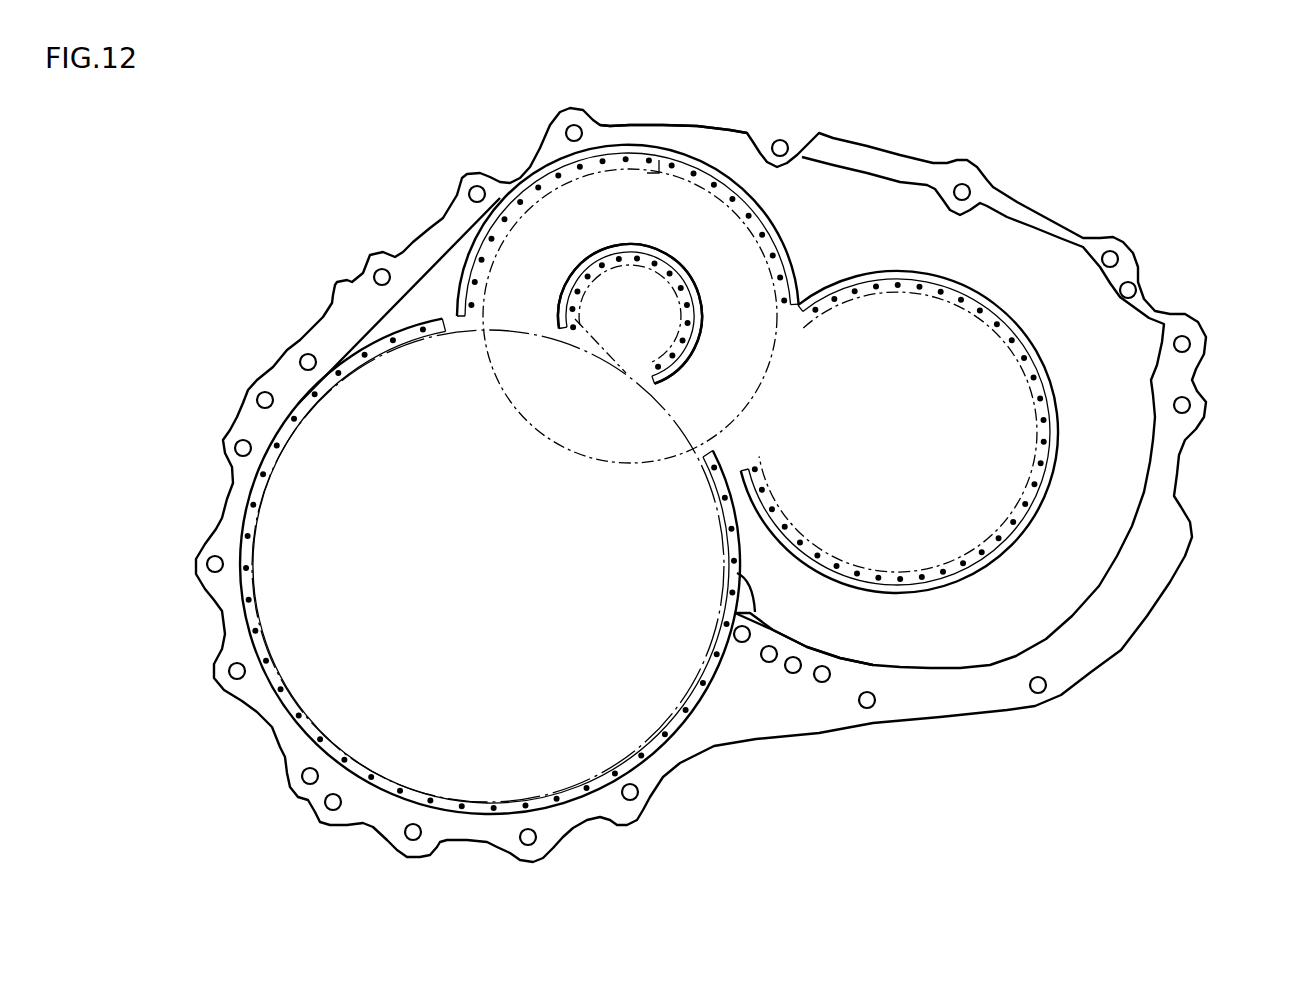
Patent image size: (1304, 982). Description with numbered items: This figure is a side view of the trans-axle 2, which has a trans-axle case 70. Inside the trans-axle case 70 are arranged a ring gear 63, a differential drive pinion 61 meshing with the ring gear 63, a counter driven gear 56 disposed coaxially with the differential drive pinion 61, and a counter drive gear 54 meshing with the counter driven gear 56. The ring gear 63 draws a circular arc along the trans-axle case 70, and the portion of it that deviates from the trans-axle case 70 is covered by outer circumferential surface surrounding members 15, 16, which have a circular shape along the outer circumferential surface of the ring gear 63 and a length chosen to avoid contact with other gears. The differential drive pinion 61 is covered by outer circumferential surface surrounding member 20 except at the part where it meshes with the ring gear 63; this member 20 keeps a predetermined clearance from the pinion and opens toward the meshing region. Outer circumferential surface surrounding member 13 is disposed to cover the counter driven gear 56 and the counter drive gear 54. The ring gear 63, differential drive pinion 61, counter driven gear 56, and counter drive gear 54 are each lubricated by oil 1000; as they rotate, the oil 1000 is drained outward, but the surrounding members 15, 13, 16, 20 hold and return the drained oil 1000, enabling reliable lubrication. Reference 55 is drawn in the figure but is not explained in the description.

The trans-axle 2 is at (1045, 142).
The outer circumferential surface surrounding member 13 is at (598, 268).
The outer circumferential surface surrounding member 15 is at (442, 520).
The outer circumferential surface surrounding member 16 is at (755, 615).
The outer circumferential surface surrounding member 20 is at (621, 272).
The counter drive gear 54 is at (1059, 474).
The joint surface 55 is at (778, 207).
The counter driven gear 56 is at (662, 146).
The differential drive pinion 61 is at (597, 268).
The ring gear 63 is at (262, 531).
The trans-axle case 70 is at (700, 127).
The oil 1000 is at (480, 256).